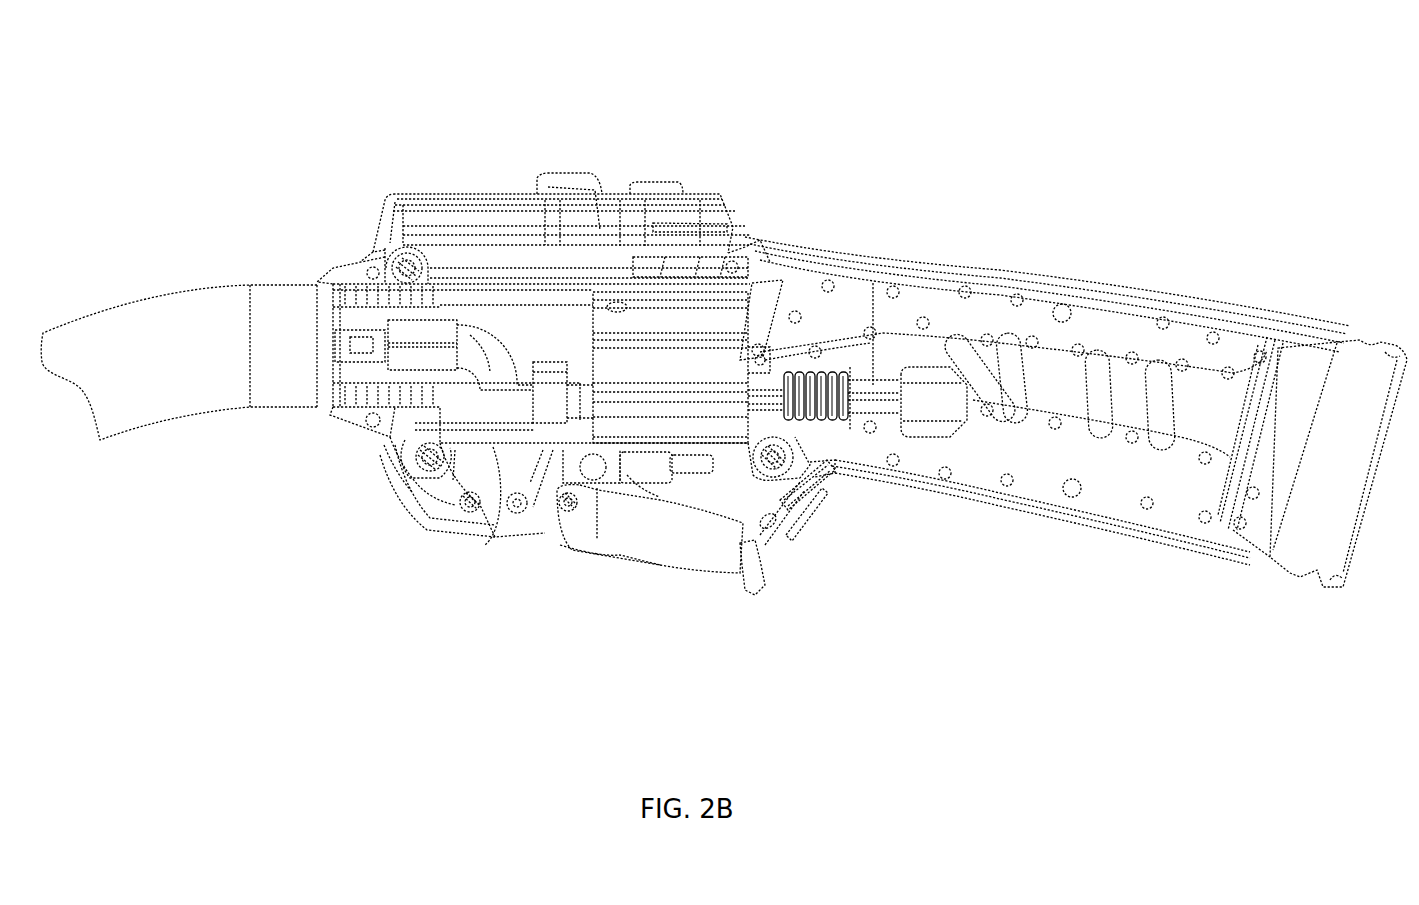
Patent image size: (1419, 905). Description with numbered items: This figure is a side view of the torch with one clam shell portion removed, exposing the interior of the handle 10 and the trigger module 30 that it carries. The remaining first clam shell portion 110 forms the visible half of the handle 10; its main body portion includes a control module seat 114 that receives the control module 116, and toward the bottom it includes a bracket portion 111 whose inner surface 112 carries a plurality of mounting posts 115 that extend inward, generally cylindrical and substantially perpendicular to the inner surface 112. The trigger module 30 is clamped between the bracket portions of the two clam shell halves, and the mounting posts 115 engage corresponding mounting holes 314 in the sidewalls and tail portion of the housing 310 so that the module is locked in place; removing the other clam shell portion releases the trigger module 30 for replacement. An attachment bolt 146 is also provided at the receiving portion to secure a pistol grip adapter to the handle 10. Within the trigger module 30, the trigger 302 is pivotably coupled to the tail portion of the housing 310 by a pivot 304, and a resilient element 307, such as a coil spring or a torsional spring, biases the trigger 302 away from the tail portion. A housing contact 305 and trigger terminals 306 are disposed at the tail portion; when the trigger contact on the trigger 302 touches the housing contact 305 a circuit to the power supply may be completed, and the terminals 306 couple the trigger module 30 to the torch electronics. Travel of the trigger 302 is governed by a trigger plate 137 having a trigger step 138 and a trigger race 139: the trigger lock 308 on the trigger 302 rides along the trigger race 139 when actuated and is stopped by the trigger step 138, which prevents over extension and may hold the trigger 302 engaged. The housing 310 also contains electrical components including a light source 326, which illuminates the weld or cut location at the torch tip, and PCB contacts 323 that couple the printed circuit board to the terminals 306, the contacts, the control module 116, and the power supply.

The handle 10 is at (865, 106).
The first clam shell portion 110 is at (957, 260).
The bracket portion 111 is at (860, 601).
The inner surface 112 is at (1080, 318).
The control module seat 114 is at (727, 233).
The mounting posts 115 is at (467, 500).
The control module 116 is at (463, 207).
The trigger plate 137 is at (783, 520).
The trigger step 138 is at (763, 540).
The trigger race 139 is at (783, 537).
The attachment bolt 146 is at (427, 455).
The trigger module 30 is at (427, 530).
The trigger 302 is at (657, 535).
The pivot 304 is at (567, 510).
The housing contact 305 is at (657, 492).
The trigger terminals 306 is at (683, 465).
The resilient element 307 is at (600, 490).
The trigger lock 308 is at (750, 537).
The housing 310 is at (490, 510).
The mounting holes 314 is at (467, 520).
The PCB contacts 323 is at (493, 447).
The light source 326 is at (410, 520).